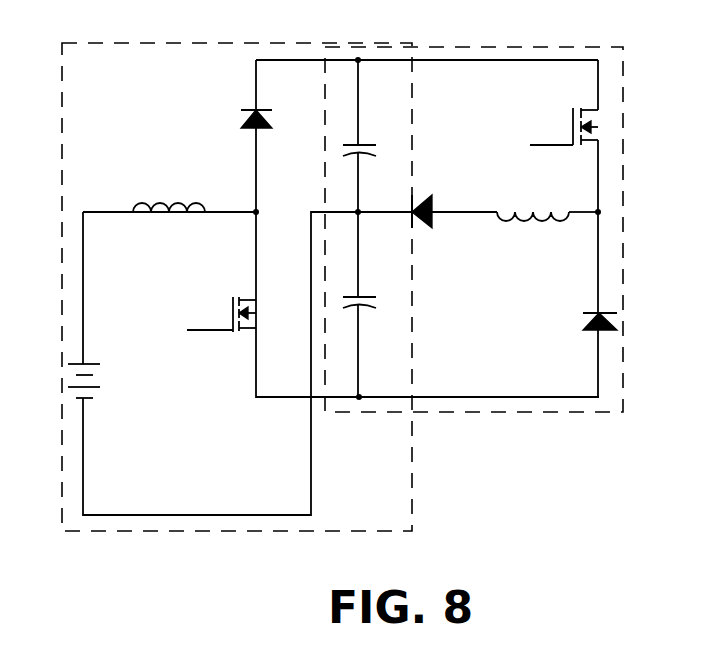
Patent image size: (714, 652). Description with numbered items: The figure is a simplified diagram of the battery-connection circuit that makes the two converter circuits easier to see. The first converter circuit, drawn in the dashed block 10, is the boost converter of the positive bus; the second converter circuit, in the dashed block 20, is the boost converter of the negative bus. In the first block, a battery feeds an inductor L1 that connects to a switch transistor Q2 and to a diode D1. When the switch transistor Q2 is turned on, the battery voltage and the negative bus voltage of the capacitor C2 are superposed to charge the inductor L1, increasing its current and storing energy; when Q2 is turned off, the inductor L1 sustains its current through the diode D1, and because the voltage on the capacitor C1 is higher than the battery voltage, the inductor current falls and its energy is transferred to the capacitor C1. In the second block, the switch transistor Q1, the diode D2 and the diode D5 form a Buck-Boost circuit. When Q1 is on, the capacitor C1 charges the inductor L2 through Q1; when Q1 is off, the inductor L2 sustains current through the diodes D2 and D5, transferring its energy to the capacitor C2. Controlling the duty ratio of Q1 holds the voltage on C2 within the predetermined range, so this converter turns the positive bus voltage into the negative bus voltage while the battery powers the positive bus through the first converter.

The first converter stage (dashed block) 10 is at (237, 287).
The second converter stage (dashed block) 20 is at (474, 229).
The diode D1 is at (244, 130).
The diode D2 is at (587, 311).
The diode D5 is at (438, 221).
The switch transistor Q1 is at (564, 138).
The switch transistor Q2 is at (221, 328).
The capacitor C1 is at (364, 136).
The capacitor C2 is at (364, 304).
The inductor L1 is at (169, 219).
The inductor L2 is at (533, 230).